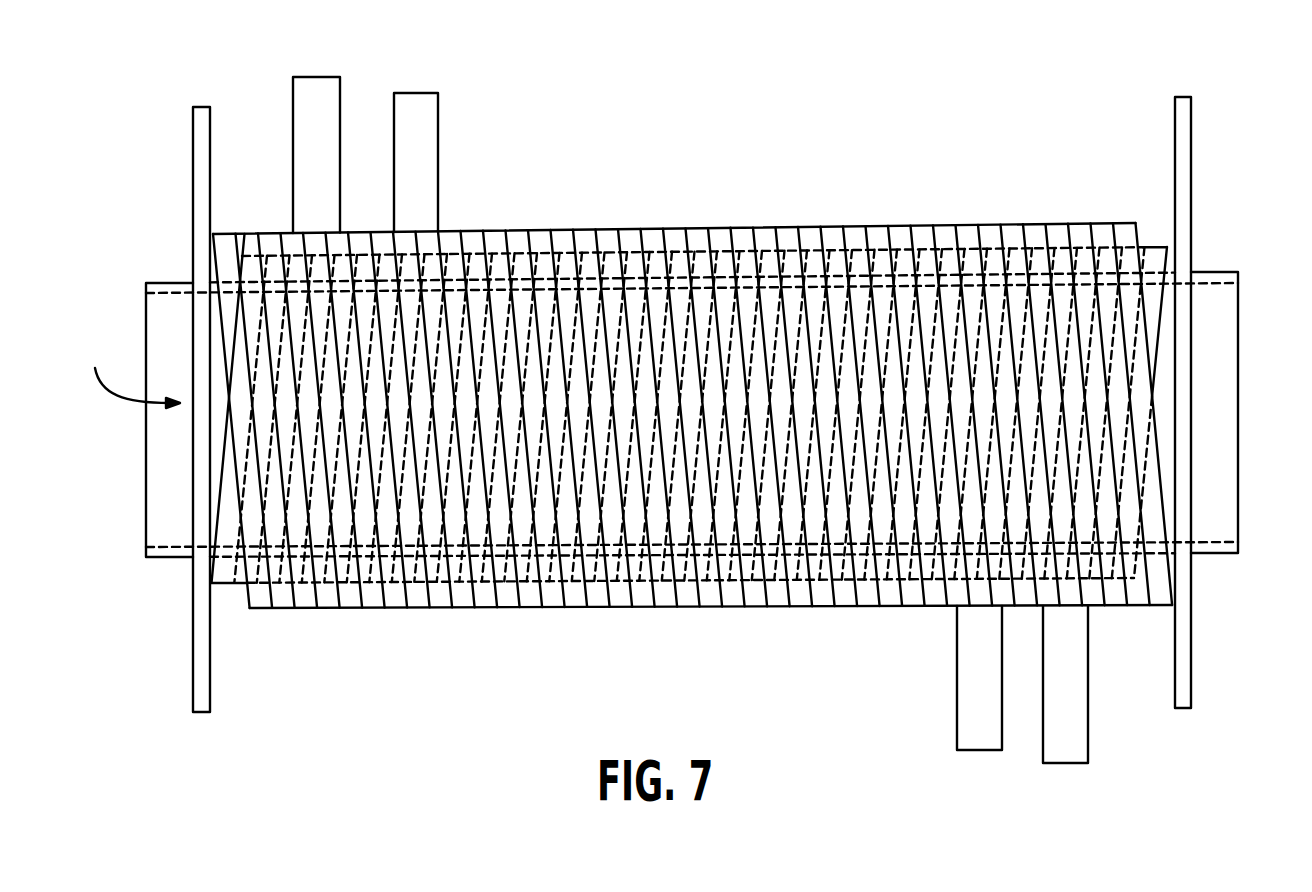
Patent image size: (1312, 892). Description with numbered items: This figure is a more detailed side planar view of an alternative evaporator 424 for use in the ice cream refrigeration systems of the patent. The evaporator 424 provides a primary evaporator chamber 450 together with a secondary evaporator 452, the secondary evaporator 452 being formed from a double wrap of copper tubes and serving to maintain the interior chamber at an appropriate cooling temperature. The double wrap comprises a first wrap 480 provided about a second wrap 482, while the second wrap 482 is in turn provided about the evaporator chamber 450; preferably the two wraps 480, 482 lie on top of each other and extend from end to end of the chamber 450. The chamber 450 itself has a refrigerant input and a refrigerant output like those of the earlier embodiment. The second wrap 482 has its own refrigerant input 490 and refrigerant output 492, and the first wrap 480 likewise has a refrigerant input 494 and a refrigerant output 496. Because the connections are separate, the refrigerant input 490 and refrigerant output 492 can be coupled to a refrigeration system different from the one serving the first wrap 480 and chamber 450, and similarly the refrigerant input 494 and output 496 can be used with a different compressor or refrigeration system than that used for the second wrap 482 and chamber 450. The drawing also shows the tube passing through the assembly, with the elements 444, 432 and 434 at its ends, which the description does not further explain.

The evaporator 424 is at (746, 407).
The first wrap 480 is at (767, 230).
The second wrap 482 is at (768, 583).
The secondary evaporator 452 is at (940, 248).
The evaporator chamber 450 is at (1147, 568).
The tube 444 is at (689, 414).
The tube inlet end 432 is at (145, 420).
The flow direction arrow 434 is at (126, 372).
The refrigerant output 496 is at (292, 103).
The refrigerant output 492 is at (440, 178).
The refrigerant input 490 is at (975, 675).
The refrigerant input 494 is at (1075, 713).